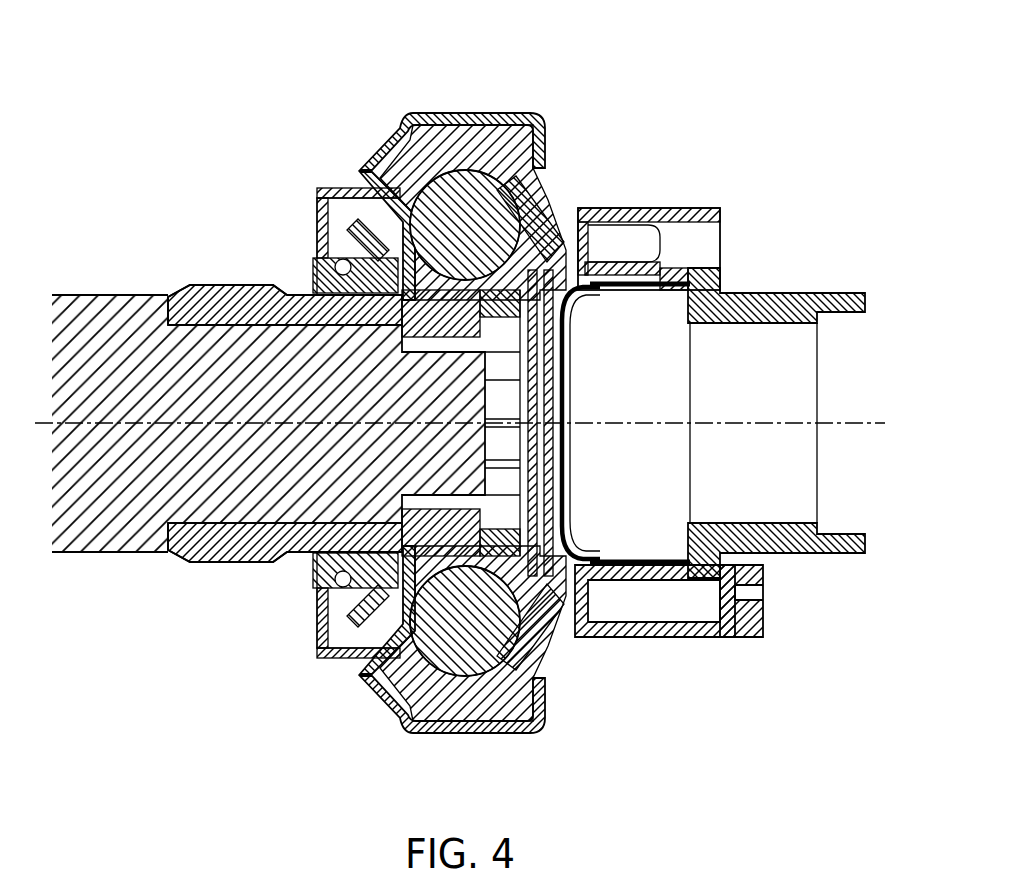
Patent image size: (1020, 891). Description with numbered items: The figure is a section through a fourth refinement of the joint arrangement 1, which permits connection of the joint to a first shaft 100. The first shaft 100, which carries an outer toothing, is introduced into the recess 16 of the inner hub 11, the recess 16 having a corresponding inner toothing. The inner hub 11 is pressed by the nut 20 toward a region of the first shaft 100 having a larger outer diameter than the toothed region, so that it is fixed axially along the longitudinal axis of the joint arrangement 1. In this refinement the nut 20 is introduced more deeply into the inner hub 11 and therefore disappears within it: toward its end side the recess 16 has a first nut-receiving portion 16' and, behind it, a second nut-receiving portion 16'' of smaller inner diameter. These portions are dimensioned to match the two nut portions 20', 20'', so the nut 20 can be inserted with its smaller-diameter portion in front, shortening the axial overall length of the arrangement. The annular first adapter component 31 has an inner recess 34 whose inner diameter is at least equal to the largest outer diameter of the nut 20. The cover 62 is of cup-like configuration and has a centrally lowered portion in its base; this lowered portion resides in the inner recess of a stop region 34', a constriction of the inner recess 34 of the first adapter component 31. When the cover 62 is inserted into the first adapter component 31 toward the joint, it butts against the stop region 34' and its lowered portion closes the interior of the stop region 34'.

The joint arrangement 1 is at (523, 76).
The inner hub 11 is at (245, 292).
The recess 16 is at (326, 375).
The first nut-receiving portion 16' is at (563, 340).
The second nut-receiving portion 16'' is at (600, 370).
The nut 20 is at (556, 423).
The nut portion 20' is at (601, 531).
The nut portion 20'' is at (334, 646).
The first adapter component 31 is at (702, 638).
The inner recess 34 is at (685, 219).
The stop region 34' is at (655, 630).
The cover 62 is at (718, 285).
The first shaft 100 is at (86, 376).